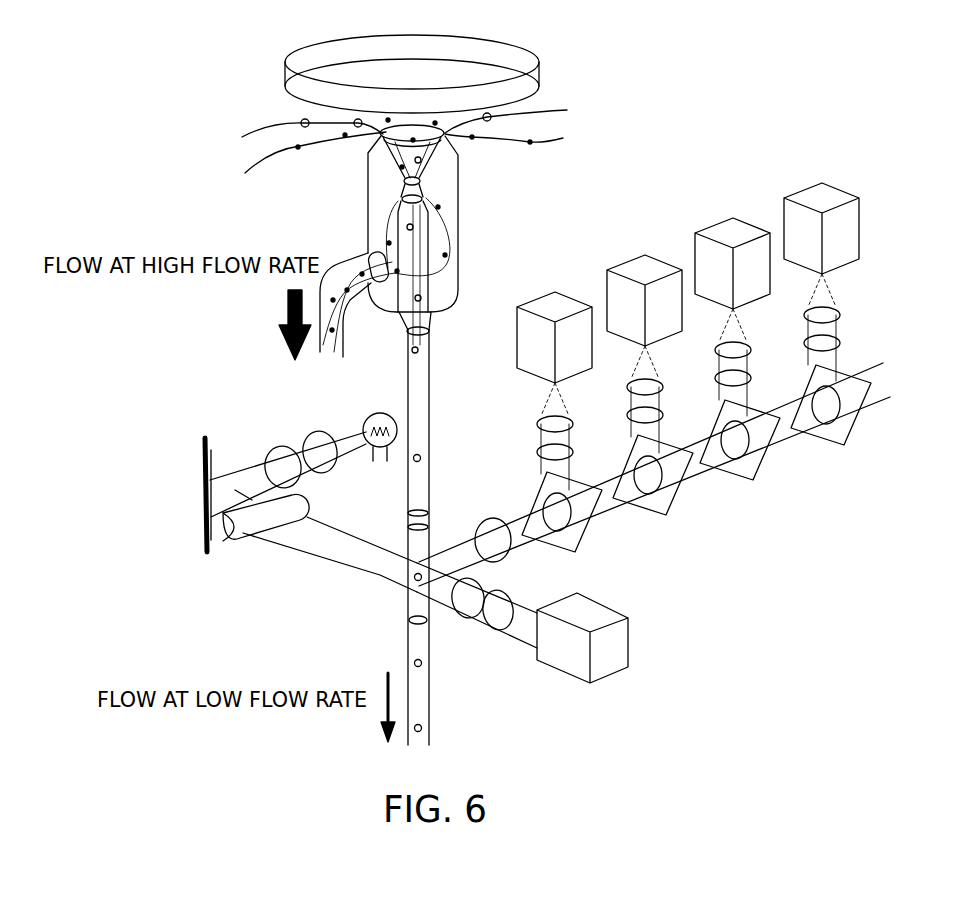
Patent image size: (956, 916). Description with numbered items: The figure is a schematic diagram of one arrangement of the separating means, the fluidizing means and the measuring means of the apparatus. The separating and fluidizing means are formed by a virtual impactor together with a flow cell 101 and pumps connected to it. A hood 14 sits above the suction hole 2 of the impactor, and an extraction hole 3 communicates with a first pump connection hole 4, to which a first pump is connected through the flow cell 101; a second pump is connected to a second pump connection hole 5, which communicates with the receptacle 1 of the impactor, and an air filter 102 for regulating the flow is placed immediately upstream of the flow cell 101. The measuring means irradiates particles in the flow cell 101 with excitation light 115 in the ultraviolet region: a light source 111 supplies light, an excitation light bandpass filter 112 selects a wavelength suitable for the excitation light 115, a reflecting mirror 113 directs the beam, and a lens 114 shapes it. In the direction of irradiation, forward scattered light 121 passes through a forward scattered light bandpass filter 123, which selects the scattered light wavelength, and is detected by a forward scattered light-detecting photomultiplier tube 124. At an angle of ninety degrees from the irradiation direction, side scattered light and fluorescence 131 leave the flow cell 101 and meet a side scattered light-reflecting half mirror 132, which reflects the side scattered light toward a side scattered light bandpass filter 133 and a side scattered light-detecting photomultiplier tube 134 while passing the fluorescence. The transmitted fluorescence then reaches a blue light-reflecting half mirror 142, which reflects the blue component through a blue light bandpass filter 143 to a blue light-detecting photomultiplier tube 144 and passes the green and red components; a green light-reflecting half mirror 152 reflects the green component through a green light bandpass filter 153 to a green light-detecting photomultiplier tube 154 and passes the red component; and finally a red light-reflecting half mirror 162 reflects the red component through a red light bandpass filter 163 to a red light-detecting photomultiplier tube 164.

The receptacle 1 is at (459, 190).
The suction hole 2 is at (404, 181).
The extraction hole 3 is at (396, 200).
The first pump connection hole 4 is at (430, 332).
The second pump connection hole 5 is at (333, 353).
The hood 14 is at (540, 70).
The flow cell 101 is at (408, 598).
The air filter 102 is at (408, 517).
The light source 111 is at (378, 412).
The excitation light bandpass filter 112 is at (308, 438).
The reflecting mirror 113 is at (206, 554).
The lens 114 is at (302, 498).
The excitation light 115 is at (316, 540).
The forward scattered light 121 is at (523, 620).
The forward scattered light bandpass filter 123 is at (492, 623).
The forward scattered light-detecting photomultiplier tube 124 is at (603, 683).
The side scattered light and fluorescence 131 is at (452, 552).
The side scattered light-reflecting half mirror 132 is at (575, 552).
The side scattered light bandpass filter 133 is at (573, 426).
The side scattered light-detecting photomultiplier tube 134 is at (550, 292).
The blue light-reflecting half mirror 142 is at (666, 515).
The blue light bandpass filter 143 is at (663, 389).
The blue light-detecting photomultiplier tube 144 is at (640, 255).
The green light-reflecting half mirror 152 is at (753, 480).
The green light bandpass filter 153 is at (751, 352).
The green light-detecting photomultiplier tube 154 is at (728, 218).
The red light-reflecting half mirror 162 is at (844, 445).
The red light bandpass filter 163 is at (840, 317).
The red light-detecting photomultiplier tube 164 is at (817, 183).